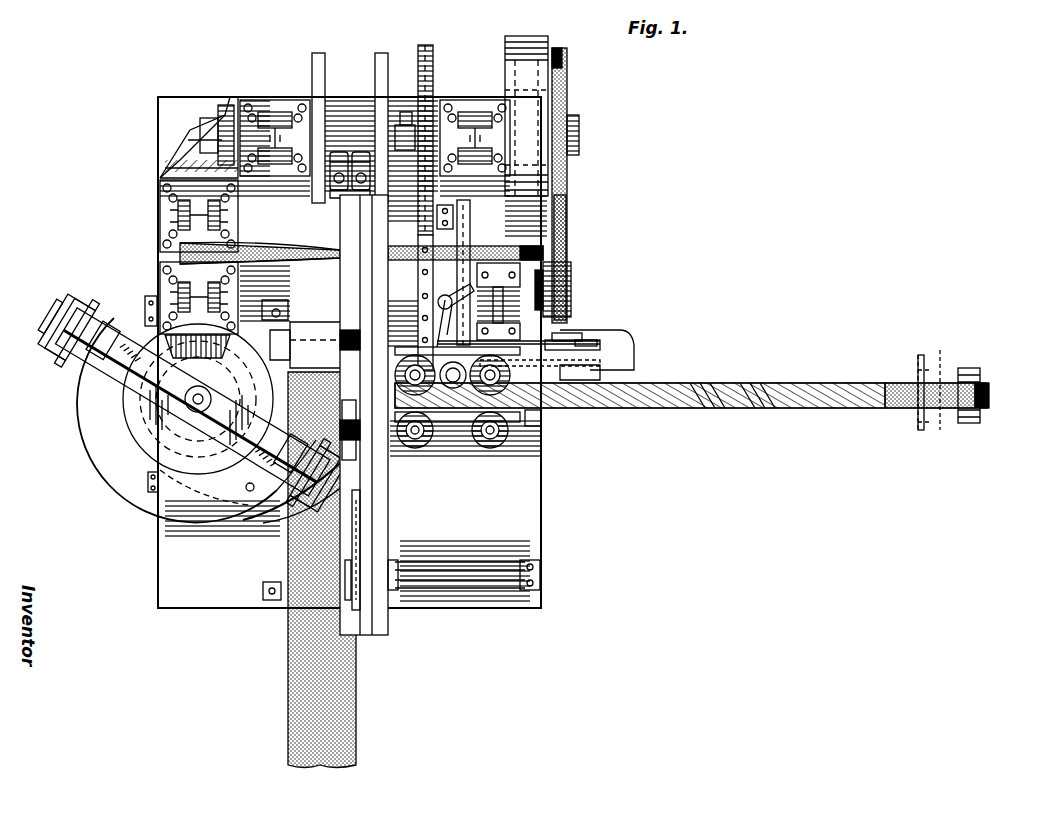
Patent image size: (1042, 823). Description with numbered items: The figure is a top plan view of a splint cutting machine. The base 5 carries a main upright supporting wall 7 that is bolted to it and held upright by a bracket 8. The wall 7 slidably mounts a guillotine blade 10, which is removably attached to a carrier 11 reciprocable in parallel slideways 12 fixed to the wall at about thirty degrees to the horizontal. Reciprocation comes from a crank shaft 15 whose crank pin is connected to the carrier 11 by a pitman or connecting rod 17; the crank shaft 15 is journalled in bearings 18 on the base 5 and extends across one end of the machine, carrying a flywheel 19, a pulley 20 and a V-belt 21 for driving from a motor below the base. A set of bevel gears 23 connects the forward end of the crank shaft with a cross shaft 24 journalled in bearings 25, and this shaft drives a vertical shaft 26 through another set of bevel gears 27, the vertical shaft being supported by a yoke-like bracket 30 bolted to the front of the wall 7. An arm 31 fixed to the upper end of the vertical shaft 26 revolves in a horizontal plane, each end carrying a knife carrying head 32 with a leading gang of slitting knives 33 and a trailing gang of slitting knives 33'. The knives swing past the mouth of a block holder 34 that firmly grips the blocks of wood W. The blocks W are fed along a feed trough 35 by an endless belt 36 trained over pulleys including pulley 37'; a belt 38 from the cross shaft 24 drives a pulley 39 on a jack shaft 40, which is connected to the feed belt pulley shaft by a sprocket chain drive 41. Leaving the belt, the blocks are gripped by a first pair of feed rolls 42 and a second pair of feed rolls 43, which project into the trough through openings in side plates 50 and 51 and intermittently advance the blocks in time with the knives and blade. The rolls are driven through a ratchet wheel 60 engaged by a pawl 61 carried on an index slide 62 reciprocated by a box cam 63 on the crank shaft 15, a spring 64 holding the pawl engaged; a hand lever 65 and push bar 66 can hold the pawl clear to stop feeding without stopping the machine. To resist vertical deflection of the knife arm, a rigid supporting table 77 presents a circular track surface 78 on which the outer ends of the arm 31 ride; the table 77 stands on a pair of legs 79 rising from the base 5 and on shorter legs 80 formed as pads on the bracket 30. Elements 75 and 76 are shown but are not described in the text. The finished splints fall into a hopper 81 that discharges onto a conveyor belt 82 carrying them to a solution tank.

The base 5 is at (545, 522).
The main upright supporting wall 7 is at (378, 640).
The bracket 8 is at (540, 578).
The guillotine blade 10 is at (360, 605).
The carrier 11 is at (345, 603).
The slideways 12 is at (365, 446).
The crank shaft 15 is at (405, 138).
The pitman or connecting rod 17 is at (348, 165).
The bearings 18 is at (283, 120).
The flywheel 19 is at (525, 40).
The pulley 20 is at (567, 78).
The V-belt 21 is at (562, 245).
The set of bevel gears 23 is at (205, 145).
The cross shaft 24 is at (198, 142).
The bearings 25 is at (190, 242).
The vertical shaft 26 is at (190, 405).
The set of bevel gears 27 is at (133, 385).
The yoke-like bracket 30 is at (262, 522).
The arm 31 is at (150, 410).
The knife carrying head 32 is at (60, 325).
The slitting knives 33 is at (174, 403).
The slitting knives 33' is at (169, 400).
The block holder 34 is at (450, 425).
The feed trough 35 is at (875, 382).
The endless belt 36 is at (986, 386).
The pulley 37' is at (943, 383).
The belt 38 is at (275, 250).
The pulley 39 is at (572, 282).
The jack shaft 40 is at (500, 318).
The sprocket chain drive 41 is at (550, 352).
The first pair of feed rolls 42 is at (495, 448).
The second pair of feed rolls 43 is at (412, 362).
The plate 50 is at (540, 428).
The plate 51 is at (458, 405).
The ratchet wheel 60 is at (470, 337).
The pawl 61 is at (432, 340).
The index slide 62 is at (432, 254).
The box cam 63 is at (432, 48).
The spring 64 is at (462, 275).
The hand lever 65 is at (600, 340).
The push bar 66 is at (580, 334).
The clamp 75 is at (95, 330).
The clamp screw 76 is at (85, 318).
The supporting table 77 is at (105, 468).
The circular track surface 78 is at (198, 515).
The legs 79 is at (148, 298).
The shorter legs 80 is at (276, 310).
The hopper 81 is at (315, 340).
The conveyor belt 82 is at (340, 745).
The blocks of wood W is at (677, 392).